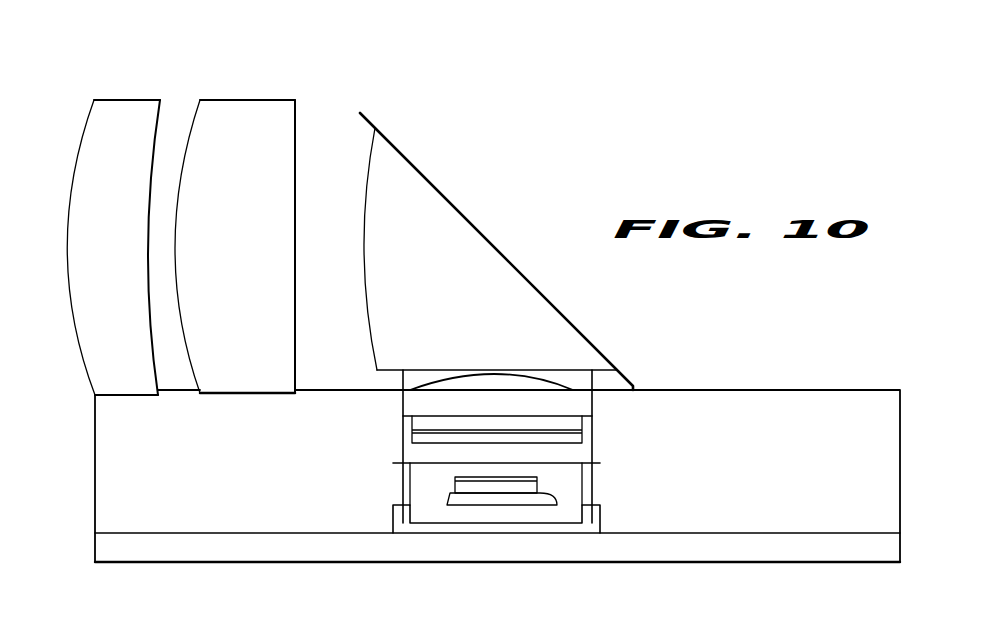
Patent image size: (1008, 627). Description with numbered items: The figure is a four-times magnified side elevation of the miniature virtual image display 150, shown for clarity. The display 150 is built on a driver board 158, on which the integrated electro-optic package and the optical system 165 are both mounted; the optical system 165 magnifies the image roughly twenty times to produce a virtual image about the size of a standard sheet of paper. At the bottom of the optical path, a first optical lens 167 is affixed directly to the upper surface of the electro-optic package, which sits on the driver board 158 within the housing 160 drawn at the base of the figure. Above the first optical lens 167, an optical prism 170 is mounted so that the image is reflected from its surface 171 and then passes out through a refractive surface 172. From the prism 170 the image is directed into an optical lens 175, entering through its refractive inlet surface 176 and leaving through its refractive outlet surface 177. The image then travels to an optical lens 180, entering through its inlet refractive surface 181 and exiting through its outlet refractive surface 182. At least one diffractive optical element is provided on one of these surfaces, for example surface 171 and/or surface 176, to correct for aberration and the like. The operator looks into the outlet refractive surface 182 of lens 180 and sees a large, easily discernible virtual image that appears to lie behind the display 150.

The miniature virtual image display 150 is at (693, 178).
The driver board 158 is at (820, 562).
The housing 160 is at (82, 491).
The optical system 165 is at (477, 110).
The first optical lens 167 is at (400, 382).
The optical prism 170 is at (437, 257).
The reflecting surface 171 is at (527, 280).
The refractive surface 172 is at (365, 187).
The optical lens 175 is at (255, 257).
The refractive inlet surface 176 is at (295, 120).
The refractive outlet surface 177 is at (196, 113).
The optical lens 180 is at (127, 257).
The inlet refractive surface 181 is at (160, 380).
The outlet refractive surface 182 is at (90, 380).